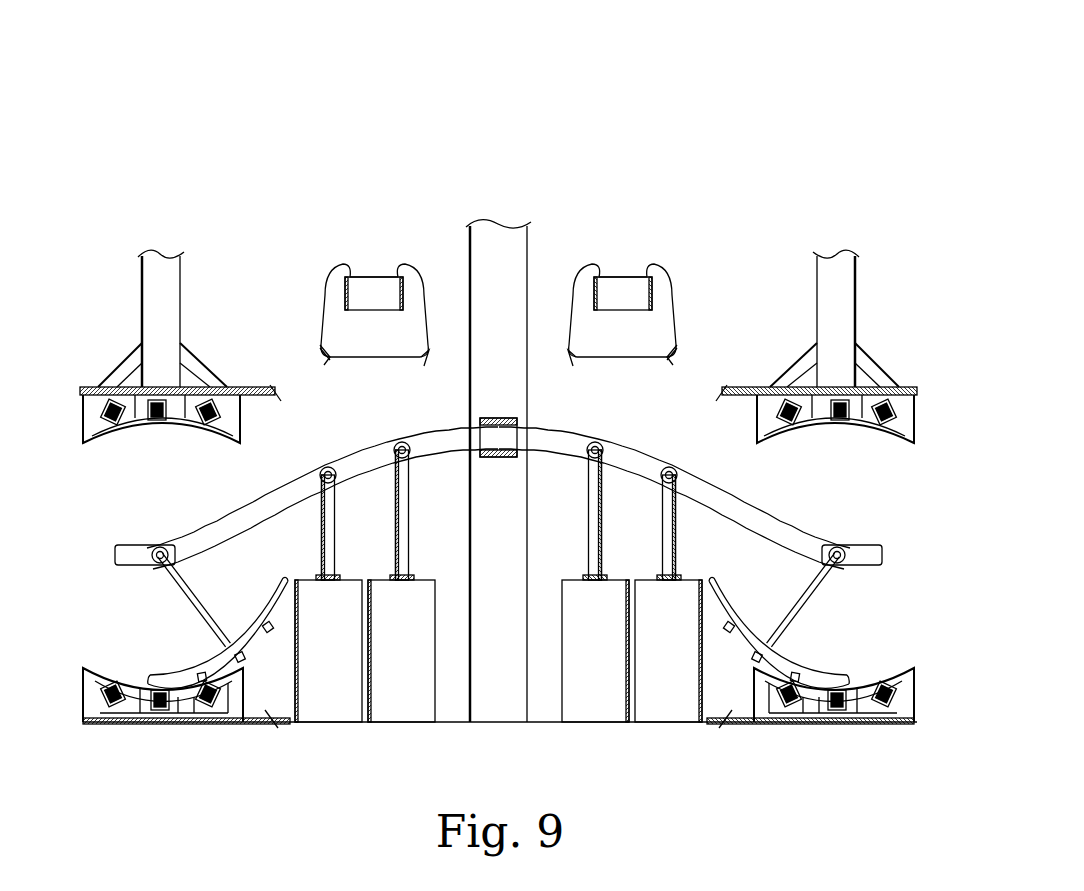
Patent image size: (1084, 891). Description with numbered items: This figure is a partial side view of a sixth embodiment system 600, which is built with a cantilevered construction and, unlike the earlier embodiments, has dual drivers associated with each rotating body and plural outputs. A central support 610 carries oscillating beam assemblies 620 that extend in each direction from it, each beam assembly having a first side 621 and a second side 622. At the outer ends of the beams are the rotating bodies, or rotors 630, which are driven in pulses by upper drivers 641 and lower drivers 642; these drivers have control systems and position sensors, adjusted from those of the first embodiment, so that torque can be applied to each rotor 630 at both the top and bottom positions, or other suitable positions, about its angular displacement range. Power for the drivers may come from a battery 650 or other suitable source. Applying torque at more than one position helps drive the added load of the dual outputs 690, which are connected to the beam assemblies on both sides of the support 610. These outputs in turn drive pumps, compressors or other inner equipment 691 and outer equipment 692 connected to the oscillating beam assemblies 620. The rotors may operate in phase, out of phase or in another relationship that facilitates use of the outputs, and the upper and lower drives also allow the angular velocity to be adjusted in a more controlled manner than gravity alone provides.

The sixth embodiment system 600 is at (723, 103).
The support 610 is at (470, 380).
The oscillating beam assembly 620 is at (362, 440).
The first side 621 is at (758, 516).
The second side 622 is at (306, 498).
The rotating body 630 is at (162, 632).
The upper driver 641 is at (215, 350).
The lower driver 642 is at (213, 742).
The battery 650 is at (378, 276).
The dual output 690 is at (322, 568).
The inner equipment 691 is at (402, 726).
The outer equipment 692 is at (328, 726).